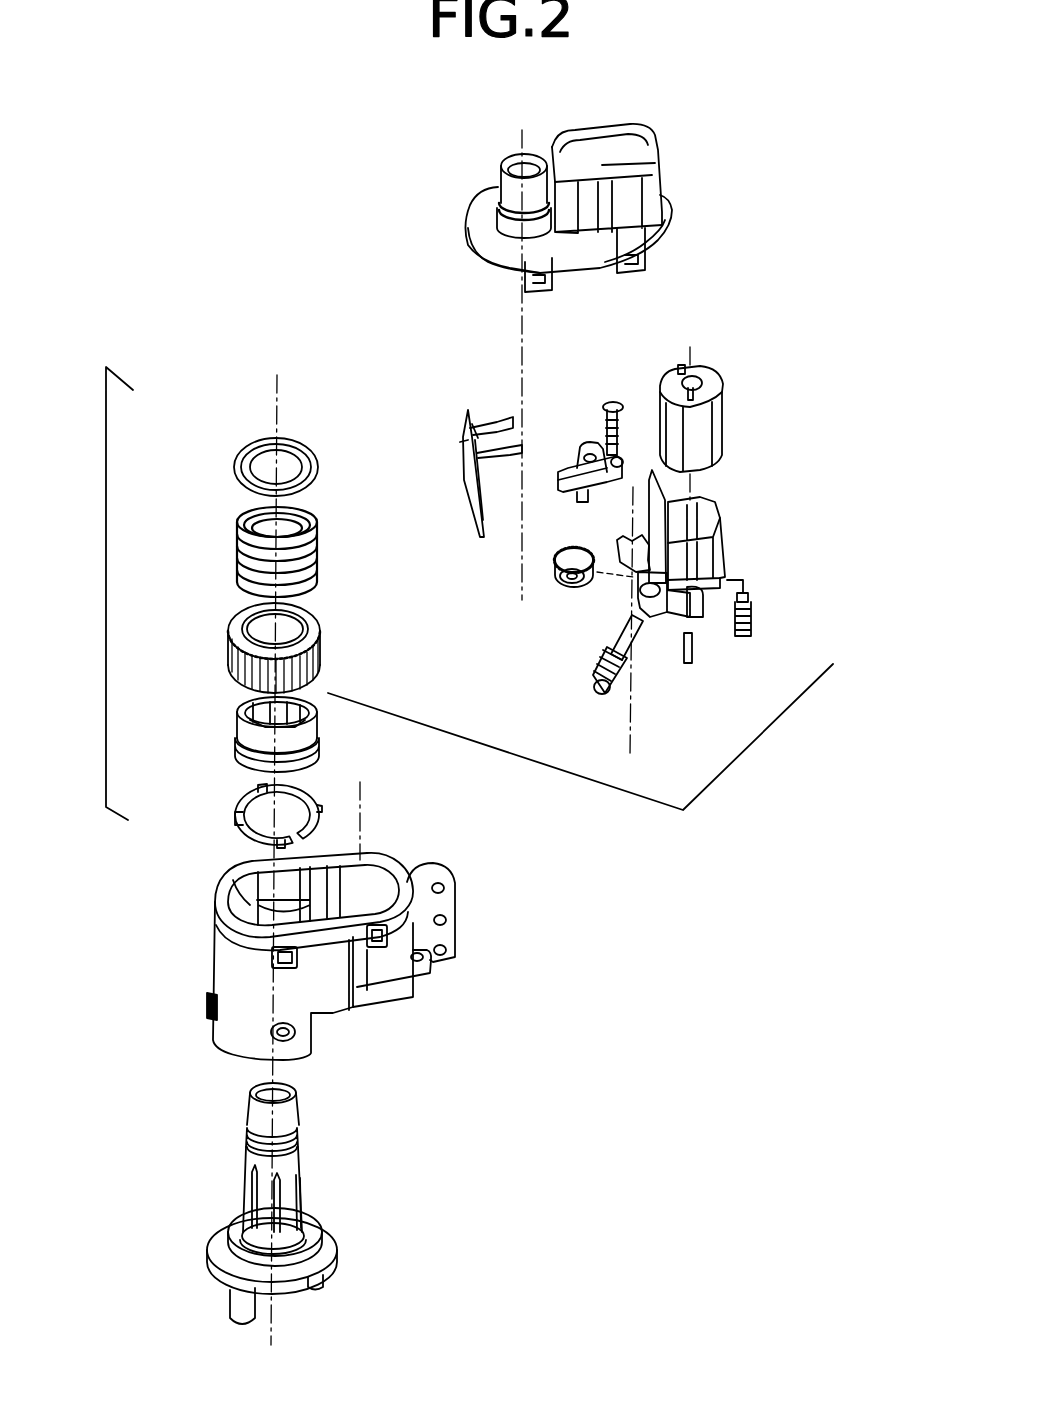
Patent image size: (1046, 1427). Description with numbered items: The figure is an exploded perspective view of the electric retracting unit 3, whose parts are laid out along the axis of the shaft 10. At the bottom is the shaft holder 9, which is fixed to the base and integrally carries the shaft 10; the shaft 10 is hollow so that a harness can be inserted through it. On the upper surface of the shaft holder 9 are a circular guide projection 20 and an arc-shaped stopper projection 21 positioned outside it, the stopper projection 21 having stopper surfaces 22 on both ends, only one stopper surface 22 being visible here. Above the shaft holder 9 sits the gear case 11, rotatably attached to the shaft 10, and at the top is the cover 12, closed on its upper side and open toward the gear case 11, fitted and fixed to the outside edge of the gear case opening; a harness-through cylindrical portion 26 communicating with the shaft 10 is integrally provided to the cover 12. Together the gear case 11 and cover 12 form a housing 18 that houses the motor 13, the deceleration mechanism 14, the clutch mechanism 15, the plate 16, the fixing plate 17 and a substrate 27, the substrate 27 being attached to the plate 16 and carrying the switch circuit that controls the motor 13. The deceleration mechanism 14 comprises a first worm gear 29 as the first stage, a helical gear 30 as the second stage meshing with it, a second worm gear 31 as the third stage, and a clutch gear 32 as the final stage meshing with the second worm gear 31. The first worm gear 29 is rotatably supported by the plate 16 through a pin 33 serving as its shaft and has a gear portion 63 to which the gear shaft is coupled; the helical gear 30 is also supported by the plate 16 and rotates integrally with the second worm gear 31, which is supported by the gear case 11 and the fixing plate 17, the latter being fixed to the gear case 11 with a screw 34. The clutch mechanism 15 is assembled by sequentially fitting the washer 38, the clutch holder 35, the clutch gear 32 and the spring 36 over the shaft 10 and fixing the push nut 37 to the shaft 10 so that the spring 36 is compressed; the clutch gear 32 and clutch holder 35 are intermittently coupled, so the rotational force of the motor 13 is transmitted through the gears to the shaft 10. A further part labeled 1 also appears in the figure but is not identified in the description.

The actuator 1 is at (618, 493).
The electric retracting unit 3 is at (345, 272).
The shaft holder 9 is at (210, 1232).
The shaft 10 is at (302, 1152).
The gear case 11 is at (217, 965).
The cover 12 is at (658, 150).
The motor 13 is at (722, 383).
The deceleration mechanism 14 is at (580, 757).
The clutch mechanism 15 is at (114, 571).
The plate 16 is at (720, 522).
The fixing plate 17 is at (578, 450).
The housing 18 is at (235, 893).
The guide projection 20 is at (232, 1257).
The stopper projection 21 is at (323, 1208).
The stopper surface 22 is at (333, 1275).
The harness-through cylindrical portion 26 is at (505, 155).
The substrate 27 is at (467, 420).
The first worm gear 29 is at (762, 655).
The helical gear 30 is at (553, 563).
The second worm gear 31 is at (617, 693).
The clutch gear 32 is at (232, 632).
The pin 33 is at (693, 655).
The screw 34 is at (605, 400).
The clutch holder 35 is at (237, 718).
The spring 36 is at (242, 533).
The push nut 37 is at (247, 452).
The washer 38 is at (240, 808).
The gear portion 63 is at (753, 610).